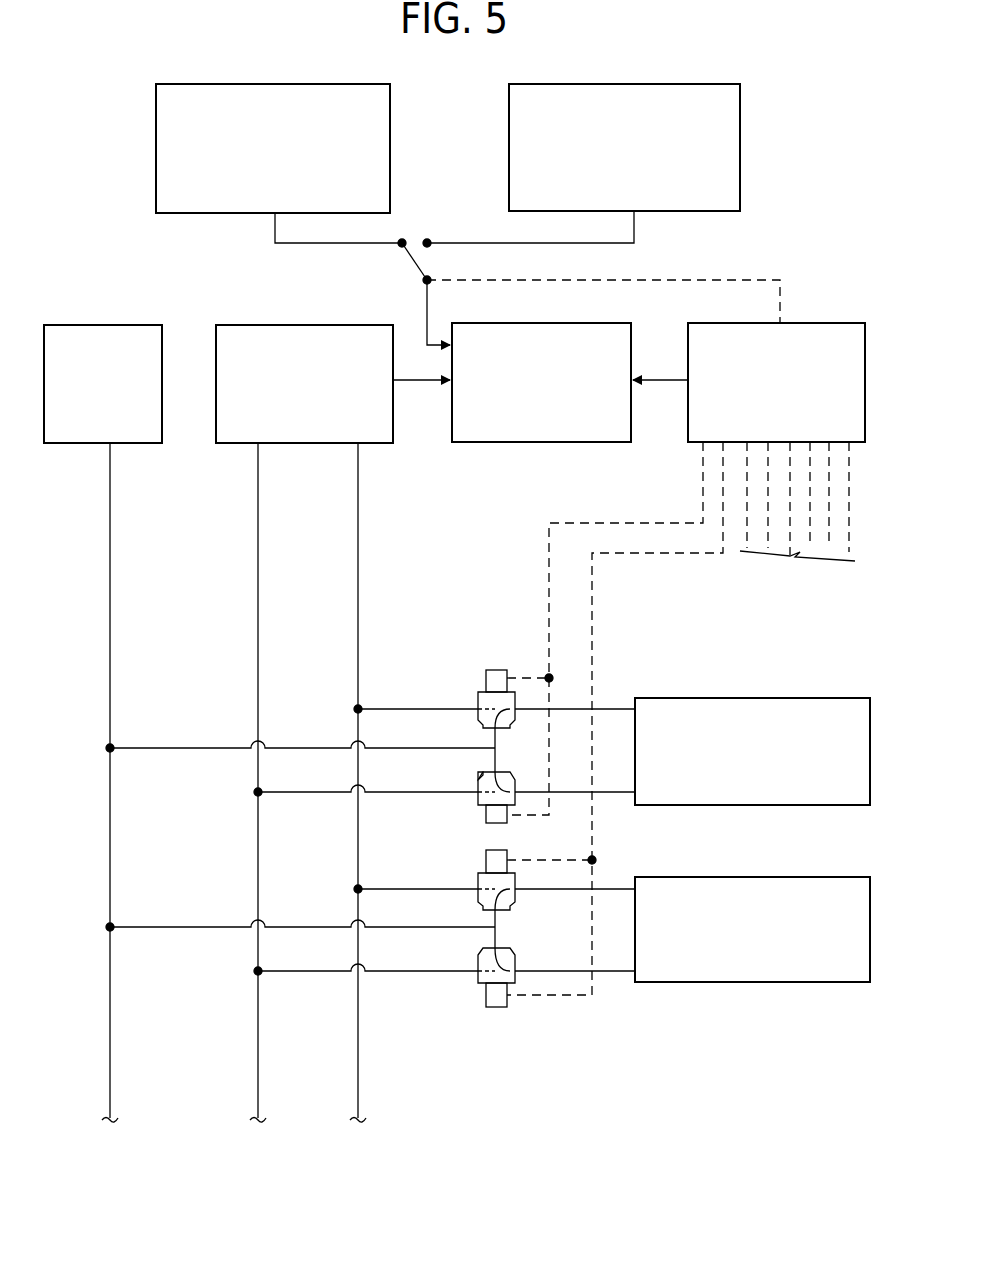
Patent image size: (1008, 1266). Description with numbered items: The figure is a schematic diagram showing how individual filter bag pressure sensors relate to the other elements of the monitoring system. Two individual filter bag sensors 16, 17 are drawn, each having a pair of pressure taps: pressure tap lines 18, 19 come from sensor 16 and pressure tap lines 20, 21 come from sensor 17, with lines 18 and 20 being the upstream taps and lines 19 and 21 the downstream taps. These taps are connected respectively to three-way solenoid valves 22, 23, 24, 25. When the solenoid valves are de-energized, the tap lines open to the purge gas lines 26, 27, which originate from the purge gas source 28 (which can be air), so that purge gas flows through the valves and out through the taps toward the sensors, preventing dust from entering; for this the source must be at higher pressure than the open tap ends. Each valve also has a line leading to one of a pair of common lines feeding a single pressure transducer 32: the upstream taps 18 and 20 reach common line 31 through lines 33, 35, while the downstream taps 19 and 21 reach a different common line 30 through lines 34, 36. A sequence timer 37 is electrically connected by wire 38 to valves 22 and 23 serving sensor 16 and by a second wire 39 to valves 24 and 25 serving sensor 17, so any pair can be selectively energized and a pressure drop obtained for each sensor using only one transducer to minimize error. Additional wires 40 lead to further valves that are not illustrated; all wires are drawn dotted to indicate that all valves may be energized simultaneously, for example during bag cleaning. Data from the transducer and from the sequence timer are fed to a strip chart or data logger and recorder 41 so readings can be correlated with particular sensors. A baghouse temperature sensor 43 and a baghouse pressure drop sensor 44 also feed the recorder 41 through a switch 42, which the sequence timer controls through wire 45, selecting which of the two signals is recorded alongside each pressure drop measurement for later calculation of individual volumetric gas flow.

The individual filter bag sensor 16 is at (730, 698).
The individual filter bag sensor 17 is at (760, 982).
The pressure tap line 18 is at (608, 709).
The pressure tap line 19 is at (612, 792).
The pressure tap line 20 is at (610, 889).
The pressure tap line 21 is at (612, 971).
The three-way solenoid valve 22 is at (478, 700).
The three-way solenoid valve 23 is at (478, 792).
The three-way solenoid valve 24 is at (478, 880).
The three-way solenoid valve 25 is at (478, 978).
The purge gas line 26 is at (160, 748).
The purge gas line 27 is at (170, 927).
The purge gas source 28 is at (120, 325).
The common line 30 is at (258, 578).
The common line 31 is at (358, 575).
The pressure transducer 32 is at (241, 443).
The line 33 is at (395, 709).
The line 34 is at (400, 792).
The line 35 is at (378, 889).
The line 36 is at (397, 971).
The sequence timer 37 is at (812, 323).
The wire 38 is at (549, 565).
The wire 39 is at (592, 612).
The additional wires 40 is at (796, 562).
The data logger and recorder 41 is at (542, 442).
The switch 42 is at (412, 260).
The baghouse temperature sensor 43 is at (225, 213).
The baghouse pressure drop sensor 44 is at (742, 188).
The wire 45 is at (725, 280).